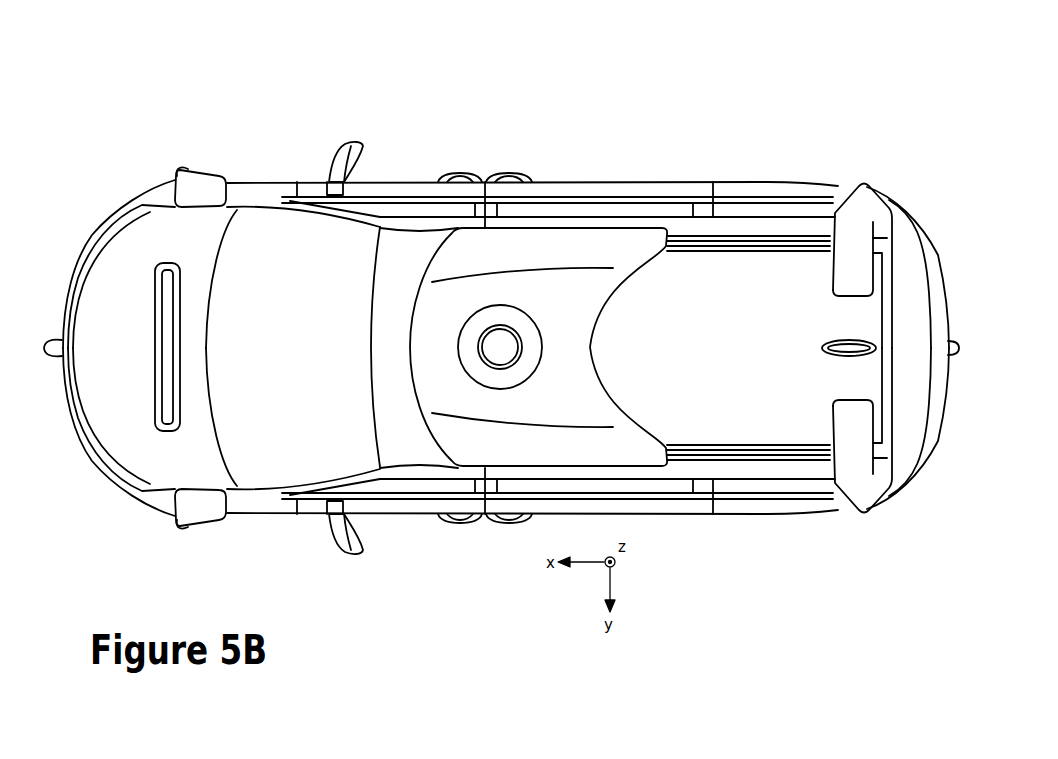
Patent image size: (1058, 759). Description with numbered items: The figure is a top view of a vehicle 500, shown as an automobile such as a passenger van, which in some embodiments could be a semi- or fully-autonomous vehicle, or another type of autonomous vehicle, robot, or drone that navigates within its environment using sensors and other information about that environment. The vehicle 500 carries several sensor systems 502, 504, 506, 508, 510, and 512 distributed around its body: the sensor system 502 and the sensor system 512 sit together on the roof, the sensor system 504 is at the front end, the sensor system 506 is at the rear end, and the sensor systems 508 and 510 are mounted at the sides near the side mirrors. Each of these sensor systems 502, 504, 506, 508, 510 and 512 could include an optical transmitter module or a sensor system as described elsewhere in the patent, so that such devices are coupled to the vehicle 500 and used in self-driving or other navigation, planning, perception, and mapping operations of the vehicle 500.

The vehicle 500 is at (848, 105).
The sensor system 502 is at (510, 305).
The sensor system 504 is at (50, 340).
The sensor system 506 is at (953, 340).
The sensor system 508 is at (182, 169).
The sensor system 510 is at (185, 524).
The sensor system 512 is at (457, 347).